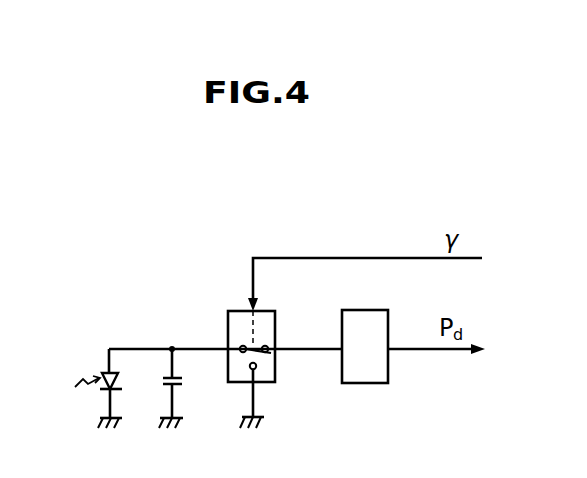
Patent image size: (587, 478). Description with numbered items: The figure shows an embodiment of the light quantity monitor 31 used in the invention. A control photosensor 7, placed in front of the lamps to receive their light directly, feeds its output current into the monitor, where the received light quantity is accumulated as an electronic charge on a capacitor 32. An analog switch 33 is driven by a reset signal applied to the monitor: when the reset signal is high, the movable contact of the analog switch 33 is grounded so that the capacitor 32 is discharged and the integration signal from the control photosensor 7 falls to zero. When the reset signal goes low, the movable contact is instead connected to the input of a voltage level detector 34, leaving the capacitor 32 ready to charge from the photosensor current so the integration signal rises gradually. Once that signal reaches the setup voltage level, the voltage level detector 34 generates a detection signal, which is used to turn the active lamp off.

The control photosensor 7 is at (92, 398).
The light quantity monitor 31 is at (238, 252).
The capacitor 32 is at (183, 380).
The analog switch 33 is at (277, 375).
The voltage level detector 34 is at (388, 372).